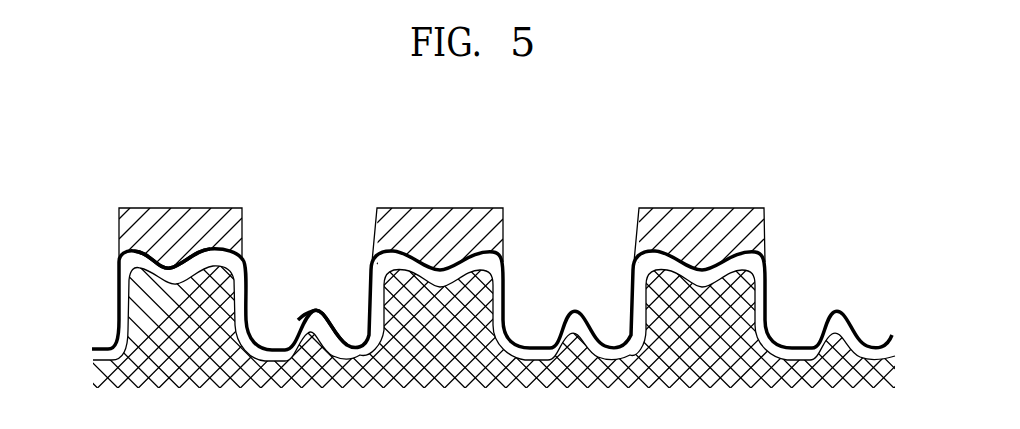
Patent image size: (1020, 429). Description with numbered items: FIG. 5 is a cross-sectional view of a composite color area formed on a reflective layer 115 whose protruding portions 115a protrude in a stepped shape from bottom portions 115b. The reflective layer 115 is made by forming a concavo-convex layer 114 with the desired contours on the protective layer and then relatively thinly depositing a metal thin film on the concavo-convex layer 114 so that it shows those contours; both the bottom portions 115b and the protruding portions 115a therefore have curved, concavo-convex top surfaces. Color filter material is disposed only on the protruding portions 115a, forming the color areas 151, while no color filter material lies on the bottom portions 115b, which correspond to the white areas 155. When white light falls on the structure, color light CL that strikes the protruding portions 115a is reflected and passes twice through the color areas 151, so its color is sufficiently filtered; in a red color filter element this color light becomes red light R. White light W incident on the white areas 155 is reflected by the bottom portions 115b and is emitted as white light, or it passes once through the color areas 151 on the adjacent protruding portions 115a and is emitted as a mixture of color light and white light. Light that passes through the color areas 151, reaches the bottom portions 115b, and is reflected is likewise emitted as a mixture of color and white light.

The concavo-convex layer 114 is at (135, 323).
The reflective layer 115 is at (125, 278).
The protruding portions 115a is at (228, 265).
The bottom portions 115b is at (310, 327).
The color areas 151 is at (128, 233).
The white areas 155 is at (590, 241).
The red light R is at (439, 236).
The white light W is at (330, 305).
The color light CL is at (168, 265).